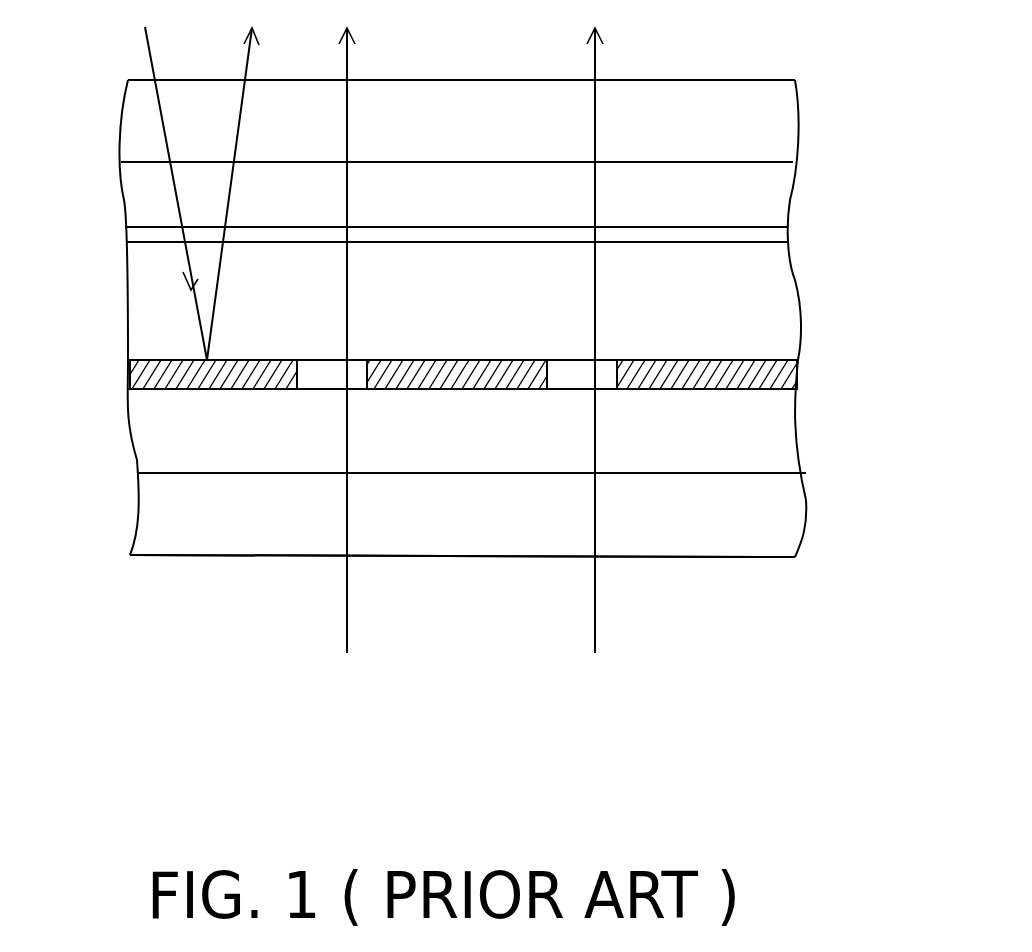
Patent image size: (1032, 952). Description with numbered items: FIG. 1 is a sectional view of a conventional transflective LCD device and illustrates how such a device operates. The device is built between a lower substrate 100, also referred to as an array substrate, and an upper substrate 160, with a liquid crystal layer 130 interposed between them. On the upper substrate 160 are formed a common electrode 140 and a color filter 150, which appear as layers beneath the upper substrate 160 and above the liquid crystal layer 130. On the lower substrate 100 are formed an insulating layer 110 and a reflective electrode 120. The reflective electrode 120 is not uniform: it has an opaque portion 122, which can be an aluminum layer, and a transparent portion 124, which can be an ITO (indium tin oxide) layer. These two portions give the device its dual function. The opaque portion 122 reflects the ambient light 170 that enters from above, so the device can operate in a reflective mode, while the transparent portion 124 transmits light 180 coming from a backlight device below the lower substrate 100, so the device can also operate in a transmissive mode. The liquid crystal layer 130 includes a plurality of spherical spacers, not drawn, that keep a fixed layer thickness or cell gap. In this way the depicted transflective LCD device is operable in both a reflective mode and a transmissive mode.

The lower substrate 100 is at (782, 526).
The insulating layer 110 is at (782, 444).
The reflective electrode 120 is at (790, 375).
The opaque portion 122 is at (236, 392).
The transparent portion 124 is at (315, 392).
The liquid crystal layer 130 is at (782, 290).
The common electrode 140 is at (770, 237).
The color filter 150 is at (770, 204).
The upper substrate 160 is at (782, 122).
The ambient light 170 is at (148, 55).
The light from the backlight device 180 is at (347, 590).